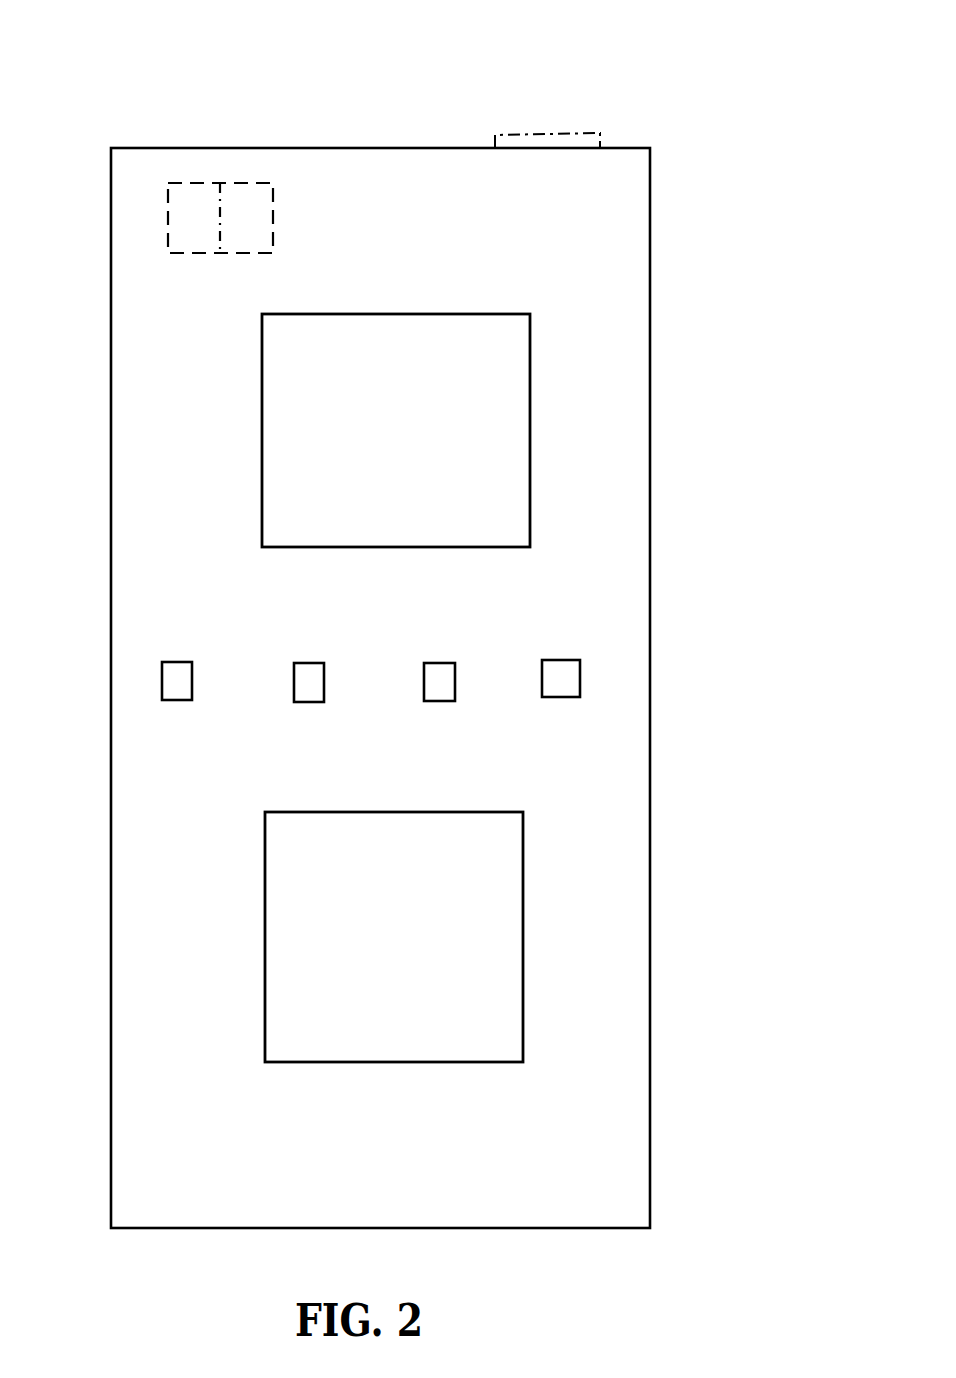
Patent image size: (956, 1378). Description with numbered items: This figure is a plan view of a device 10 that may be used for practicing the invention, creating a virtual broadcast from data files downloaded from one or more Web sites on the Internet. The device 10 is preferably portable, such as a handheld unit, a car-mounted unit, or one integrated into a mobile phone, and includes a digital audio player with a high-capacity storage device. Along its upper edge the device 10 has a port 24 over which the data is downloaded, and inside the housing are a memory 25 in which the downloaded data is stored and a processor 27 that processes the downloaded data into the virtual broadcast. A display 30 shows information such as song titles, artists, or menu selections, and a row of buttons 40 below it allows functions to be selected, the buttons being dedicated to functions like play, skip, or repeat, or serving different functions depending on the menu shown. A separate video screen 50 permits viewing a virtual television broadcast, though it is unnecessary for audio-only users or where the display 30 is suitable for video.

The device 10 is at (650, 213).
The port 24 is at (550, 132).
The memory 25 is at (190, 183).
The processor 27 is at (356, 139).
The display 30 is at (530, 417).
The buttons 40 is at (580, 678).
The video screen 50 is at (523, 932).